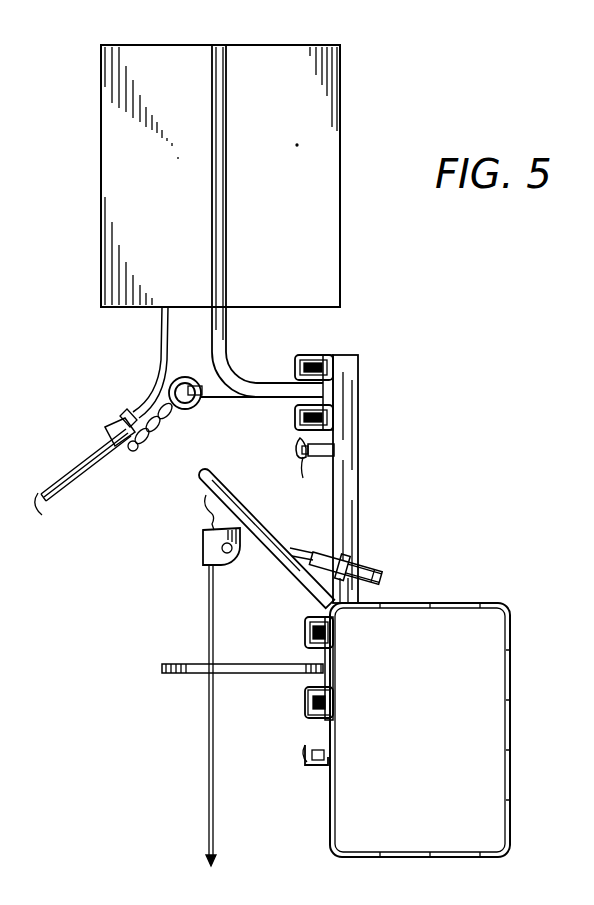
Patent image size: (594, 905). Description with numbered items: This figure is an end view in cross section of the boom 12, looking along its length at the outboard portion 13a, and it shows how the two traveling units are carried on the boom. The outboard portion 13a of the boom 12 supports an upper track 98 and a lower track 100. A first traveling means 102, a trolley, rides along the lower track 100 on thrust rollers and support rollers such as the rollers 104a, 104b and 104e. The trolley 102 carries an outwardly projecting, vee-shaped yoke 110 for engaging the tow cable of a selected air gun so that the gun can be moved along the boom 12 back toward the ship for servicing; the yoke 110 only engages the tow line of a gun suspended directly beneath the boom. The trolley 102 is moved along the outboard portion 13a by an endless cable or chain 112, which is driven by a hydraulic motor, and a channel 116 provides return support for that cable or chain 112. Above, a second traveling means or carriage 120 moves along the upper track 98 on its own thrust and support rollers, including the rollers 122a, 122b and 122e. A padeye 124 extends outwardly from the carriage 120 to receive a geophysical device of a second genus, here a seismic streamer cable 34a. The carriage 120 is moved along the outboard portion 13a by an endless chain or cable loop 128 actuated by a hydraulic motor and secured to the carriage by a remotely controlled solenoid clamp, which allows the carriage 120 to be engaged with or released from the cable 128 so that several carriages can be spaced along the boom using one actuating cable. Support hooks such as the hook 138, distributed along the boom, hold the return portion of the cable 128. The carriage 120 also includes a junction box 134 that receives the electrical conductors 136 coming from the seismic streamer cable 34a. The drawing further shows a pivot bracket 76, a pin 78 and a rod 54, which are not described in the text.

The junction box 134 is at (114, 186).
The electrical conductors 136 is at (156, 368).
The padeye 124 is at (215, 380).
The thrust and support roller 122a is at (298, 370).
The thrust and support roller 122b is at (297, 412).
The thrust and support roller 122e is at (297, 440).
The upper track 98 is at (310, 356).
The endless chain or cable loop 128 is at (330, 441).
The carriage 120 is at (280, 442).
The support hook 138 is at (302, 478).
The seismic streamer cable 34a is at (80, 478).
The pivot bracket 76 is at (203, 546).
The pivot pin 78 is at (369, 566).
The outboard portion of boom 13a is at (509, 566).
The boom 12 is at (456, 603).
The actuating rod 54 is at (208, 612).
The thrust roller or support roller 104a is at (303, 632).
The first traveling means 102 is at (293, 651).
The vee-shaped yoke 110 is at (194, 674).
The lower track 100 is at (306, 697).
The thrust roller or support roller 104b is at (305, 707).
The thrust roller or support roller 104e is at (325, 722).
The channel 116 is at (303, 757).
The endless cable or chain 112 is at (326, 752).